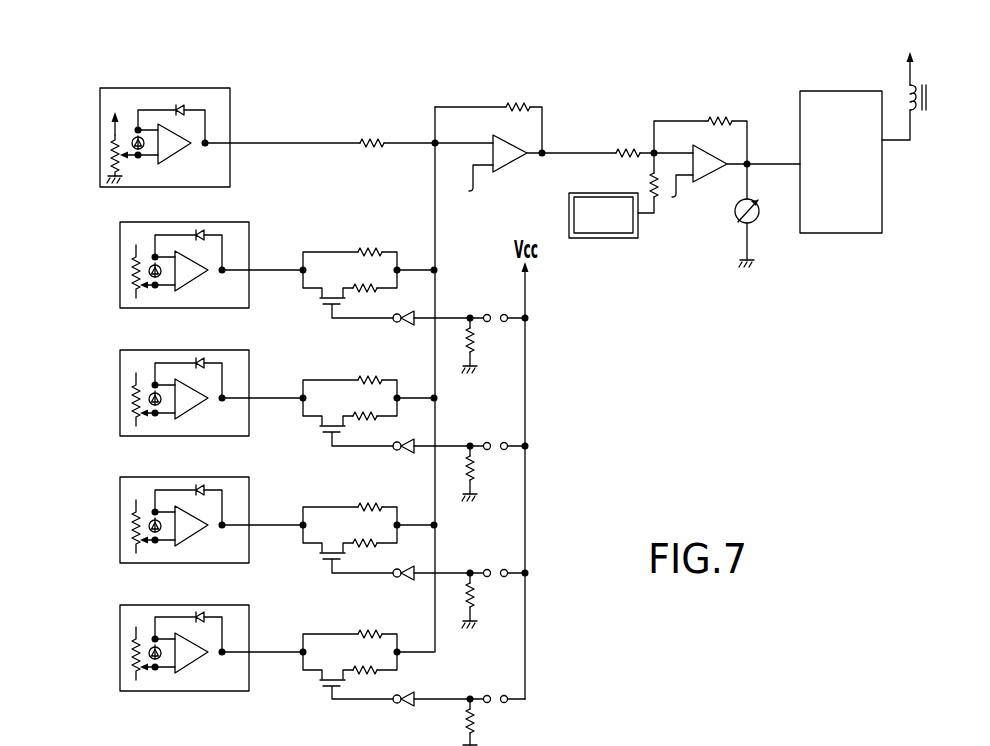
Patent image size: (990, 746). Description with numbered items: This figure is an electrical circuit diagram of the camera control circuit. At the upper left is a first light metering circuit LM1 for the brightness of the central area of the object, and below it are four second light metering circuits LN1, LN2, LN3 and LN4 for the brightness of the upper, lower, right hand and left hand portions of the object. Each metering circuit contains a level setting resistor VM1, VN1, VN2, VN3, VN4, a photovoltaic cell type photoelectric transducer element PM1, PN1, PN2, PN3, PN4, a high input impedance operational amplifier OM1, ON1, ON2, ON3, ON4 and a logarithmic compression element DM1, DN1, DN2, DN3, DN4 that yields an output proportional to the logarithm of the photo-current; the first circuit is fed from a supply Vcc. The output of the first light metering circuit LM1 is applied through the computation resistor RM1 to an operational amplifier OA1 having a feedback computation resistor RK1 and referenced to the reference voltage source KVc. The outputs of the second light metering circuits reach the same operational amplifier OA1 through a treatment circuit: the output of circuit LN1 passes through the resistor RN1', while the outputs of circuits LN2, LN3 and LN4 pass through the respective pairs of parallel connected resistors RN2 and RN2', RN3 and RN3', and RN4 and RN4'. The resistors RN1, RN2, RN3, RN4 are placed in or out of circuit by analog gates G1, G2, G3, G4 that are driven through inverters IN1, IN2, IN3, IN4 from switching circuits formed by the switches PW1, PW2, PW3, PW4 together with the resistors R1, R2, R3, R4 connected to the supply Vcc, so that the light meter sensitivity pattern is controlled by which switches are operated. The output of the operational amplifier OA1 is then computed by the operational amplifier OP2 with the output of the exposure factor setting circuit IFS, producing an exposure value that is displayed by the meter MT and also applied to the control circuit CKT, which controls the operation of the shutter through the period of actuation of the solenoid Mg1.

The first light metering circuit LM1 is at (100, 110).
The level setting resistor VM1 is at (110, 150).
The photovoltaic cell type photoelectric transducer element PM1 is at (146, 150).
The logarithmic compression element DM1 is at (182, 104).
The high input impedance operational amplifier OM1 is at (168, 152).
The computation resistor RM1 is at (372, 139).
The computation resistor RK1 is at (518, 103).
The operational amplifier OA1 is at (514, 158).
The reference voltage source KVc is at (576, 194).
The resistor R1 is at (628, 149).
The resistor R2 is at (650, 184).
The resistor R3 is at (720, 117).
The resistor R4 is at (475, 719).
The operational amplifier OP2 is at (712, 136).
The exposure factor setting circuit IFS is at (603, 215).
The meter MT is at (737, 224).
The control circuit CKT is at (841, 162).
The solenoid Mg1 is at (929, 100).
The supply voltage Vcc is at (118, 113).
The second light metering circuit LN1 is at (120, 240).
The second light metering circuit LN2 is at (120, 368).
The second light metering circuit LN3 is at (120, 495).
The second light metering circuit LN4 is at (120, 622).
The level setting resistor VN1 is at (130, 277).
The level setting resistor VN2 is at (130, 405).
The level setting resistor VN3 is at (130, 532).
The level setting resistor VN4 is at (130, 659).
The photovoltaic cell type photoelectric transducer element PN1 is at (162, 278).
The photovoltaic cell type photoelectric transducer element PN2 is at (162, 406).
The photovoltaic cell type photoelectric transducer element PN3 is at (162, 533).
The photovoltaic cell type photoelectric transducer element PN4 is at (162, 660).
The logarithmic compression element DN1 is at (202, 230).
The logarithmic compression element DN2 is at (202, 358).
The logarithmic compression element DN3 is at (202, 485).
The logarithmic compression element DN4 is at (202, 612).
The high input impedance operational amplifier ON1 is at (198, 276).
The high input impedance operational amplifier ON2 is at (198, 404).
The high input impedance operational amplifier ON3 is at (198, 531).
The high input impedance operational amplifier ON4 is at (198, 658).
The resistor RN1' is at (350, 241).
The resistor RN2' is at (350, 369).
The resistor RN3' is at (350, 496).
The resistor RN4' is at (350, 623).
The resistor RN1 is at (350, 276).
The resistor RN2 is at (350, 404).
The resistor RN3 is at (350, 531).
The resistor RN4 is at (350, 658).
The analog gate G1 is at (322, 303).
The analog gate G2 is at (322, 431).
The analog gate G3 is at (322, 558).
The analog gate G4 is at (322, 685).
The inverter IN1 is at (406, 325).
The inverter IN2 is at (406, 453).
The inverter IN3 is at (406, 580).
The inverter IN4 is at (406, 706).
The switch PW1 is at (488, 313).
The switch PW2 is at (488, 441).
The switch PW3 is at (488, 568).
The switch PW4 is at (488, 694).